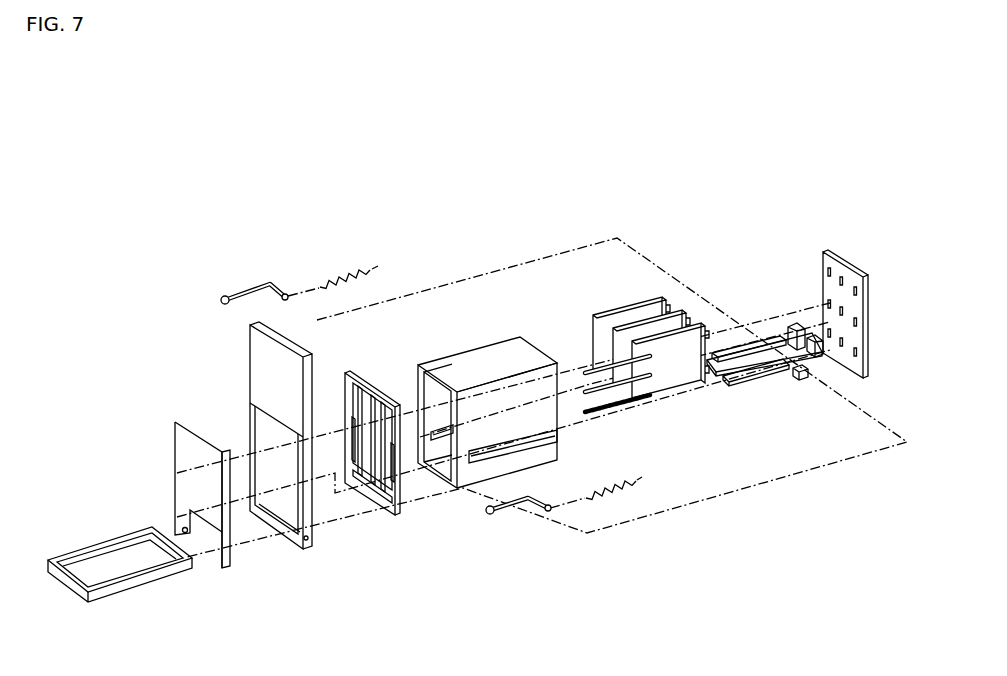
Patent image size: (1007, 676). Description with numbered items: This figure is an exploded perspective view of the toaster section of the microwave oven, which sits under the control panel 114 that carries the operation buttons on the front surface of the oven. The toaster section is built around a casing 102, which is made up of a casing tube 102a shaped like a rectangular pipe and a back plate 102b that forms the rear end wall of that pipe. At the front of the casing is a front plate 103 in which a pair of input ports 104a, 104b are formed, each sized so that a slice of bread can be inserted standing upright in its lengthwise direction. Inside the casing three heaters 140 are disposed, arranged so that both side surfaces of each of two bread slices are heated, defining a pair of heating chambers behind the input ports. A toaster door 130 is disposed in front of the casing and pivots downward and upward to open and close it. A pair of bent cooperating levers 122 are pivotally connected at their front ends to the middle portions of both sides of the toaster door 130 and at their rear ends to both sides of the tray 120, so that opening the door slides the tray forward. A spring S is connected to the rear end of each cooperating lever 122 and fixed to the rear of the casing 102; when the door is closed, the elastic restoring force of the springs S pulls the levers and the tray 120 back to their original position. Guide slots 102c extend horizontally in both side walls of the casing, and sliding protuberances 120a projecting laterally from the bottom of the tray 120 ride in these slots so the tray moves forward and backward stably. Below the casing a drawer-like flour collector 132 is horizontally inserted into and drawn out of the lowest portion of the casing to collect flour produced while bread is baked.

The casing 102 is at (643, 414).
The casing tube 102a is at (600, 456).
The back plate 102b is at (857, 340).
The guide slots 102c is at (478, 462).
The front plate 103 is at (376, 390).
The input port 104a is at (364, 497).
The input port 104b is at (378, 513).
The control panel 114 is at (263, 375).
The tray 120 is at (765, 340).
The sliding protuberances 120a is at (804, 380).
The cooperating levers 122 is at (528, 502).
The toaster door 130 is at (210, 482).
The flour collector 132 is at (150, 570).
The heater 140 is at (627, 297).
The spring S is at (622, 492).